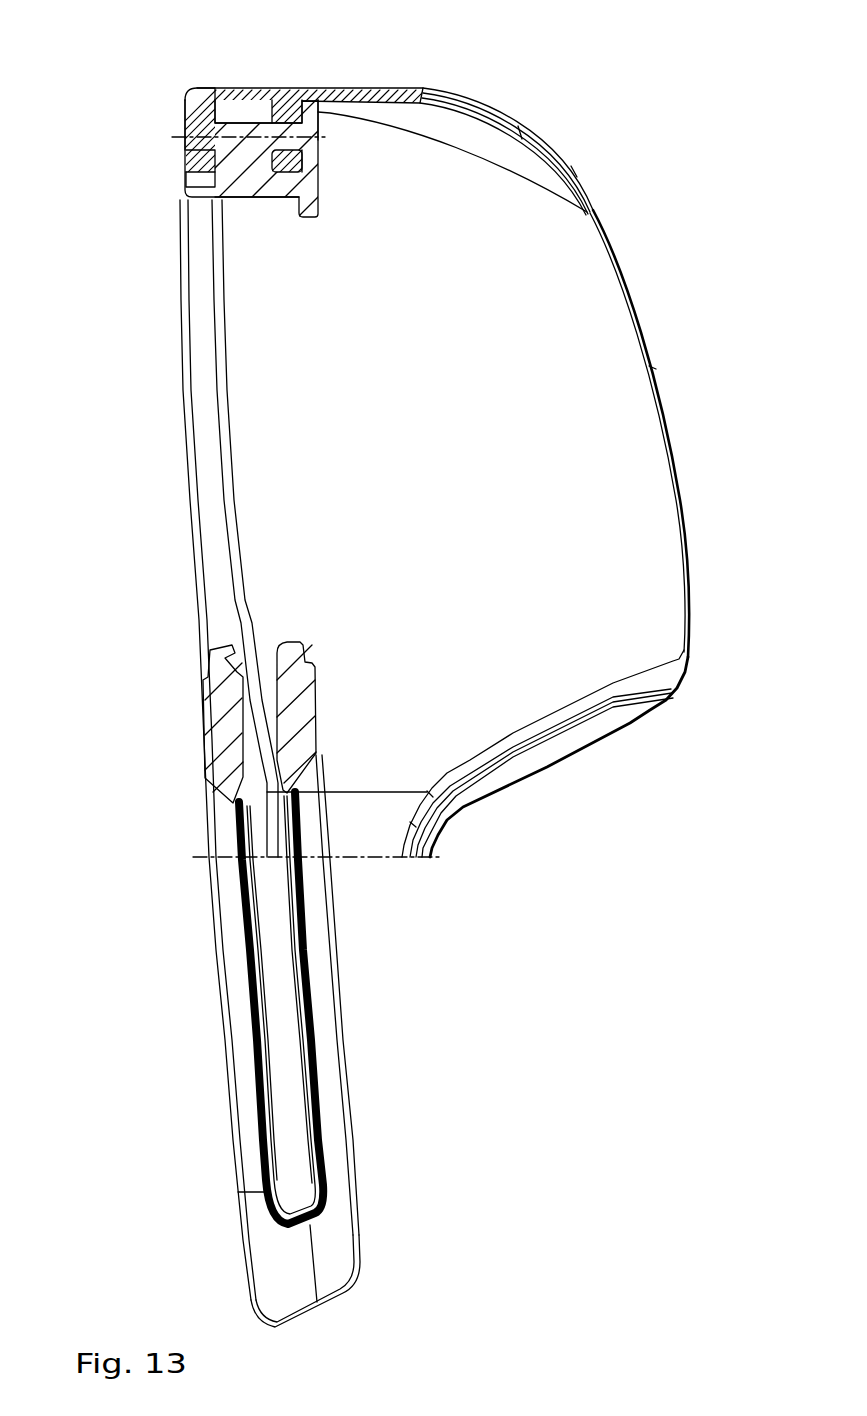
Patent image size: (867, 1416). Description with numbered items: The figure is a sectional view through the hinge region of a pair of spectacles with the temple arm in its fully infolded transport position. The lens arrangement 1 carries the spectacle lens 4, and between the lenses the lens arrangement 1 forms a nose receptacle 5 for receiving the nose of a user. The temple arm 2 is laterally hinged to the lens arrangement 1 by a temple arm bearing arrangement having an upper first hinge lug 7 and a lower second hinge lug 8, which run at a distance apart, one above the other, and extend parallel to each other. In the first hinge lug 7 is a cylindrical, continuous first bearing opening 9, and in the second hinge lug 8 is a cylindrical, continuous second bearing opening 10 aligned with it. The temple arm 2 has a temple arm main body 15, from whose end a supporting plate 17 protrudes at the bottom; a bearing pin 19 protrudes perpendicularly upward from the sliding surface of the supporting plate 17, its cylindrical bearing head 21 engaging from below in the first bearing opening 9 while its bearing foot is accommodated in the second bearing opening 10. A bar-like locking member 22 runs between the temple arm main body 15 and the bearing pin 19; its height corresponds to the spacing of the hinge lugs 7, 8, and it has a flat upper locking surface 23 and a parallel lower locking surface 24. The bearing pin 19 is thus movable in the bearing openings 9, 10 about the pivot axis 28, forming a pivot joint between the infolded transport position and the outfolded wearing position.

The lens arrangement 1 is at (650, 341).
The temple arm 2 is at (210, 902).
The spectacle lens 4 is at (633, 442).
The nose receptacle 5 is at (597, 817).
The first hinge lug 7 is at (186, 164).
The second hinge lug 8 is at (323, 107).
The first bearing opening 9 is at (188, 127).
The second bearing opening 10 is at (282, 148).
The temple arm main body 15 is at (238, 1013).
The supporting plate 17 is at (310, 103).
The bearing pin 19 is at (223, 130).
The bearing head 21 is at (188, 126).
The locking member 22 is at (245, 163).
The upper locking surface 23 is at (205, 180).
The lower locking surface 24 is at (292, 175).
The pivot axis 28 is at (253, 133).